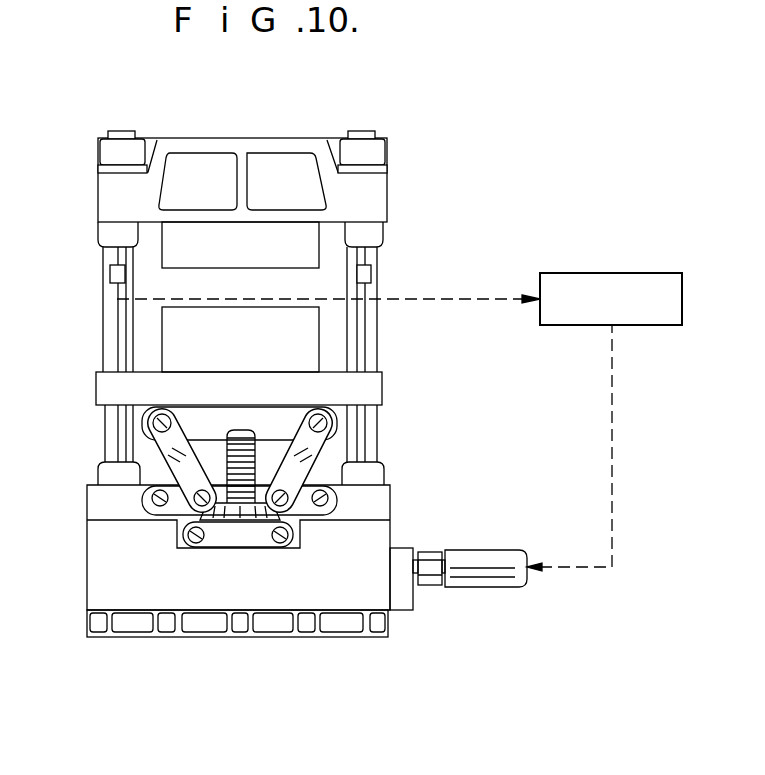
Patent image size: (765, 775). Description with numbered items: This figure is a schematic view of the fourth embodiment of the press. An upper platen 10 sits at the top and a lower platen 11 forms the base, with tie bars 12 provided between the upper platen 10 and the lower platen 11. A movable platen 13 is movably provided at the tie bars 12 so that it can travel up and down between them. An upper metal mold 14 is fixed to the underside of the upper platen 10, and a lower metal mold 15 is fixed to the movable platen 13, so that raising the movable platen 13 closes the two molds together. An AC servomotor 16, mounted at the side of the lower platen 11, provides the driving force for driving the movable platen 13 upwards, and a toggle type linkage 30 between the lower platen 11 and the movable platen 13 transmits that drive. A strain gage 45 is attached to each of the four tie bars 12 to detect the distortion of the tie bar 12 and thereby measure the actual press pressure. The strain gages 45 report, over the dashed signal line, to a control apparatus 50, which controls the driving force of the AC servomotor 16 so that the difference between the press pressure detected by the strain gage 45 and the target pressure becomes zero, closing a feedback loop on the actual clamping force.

The upper platen 10 is at (388, 195).
The lower platen 11 is at (390, 503).
The tie bar 12 is at (378, 284).
The movable platen 13 is at (372, 390).
The upper metal mold 14 is at (272, 268).
The lower metal mold 15 is at (207, 299).
The AC servomotor 16 is at (512, 547).
The toggle linkage 30 is at (322, 462).
The strain gage 45 is at (110, 273).
The control apparatus 50 is at (608, 273).